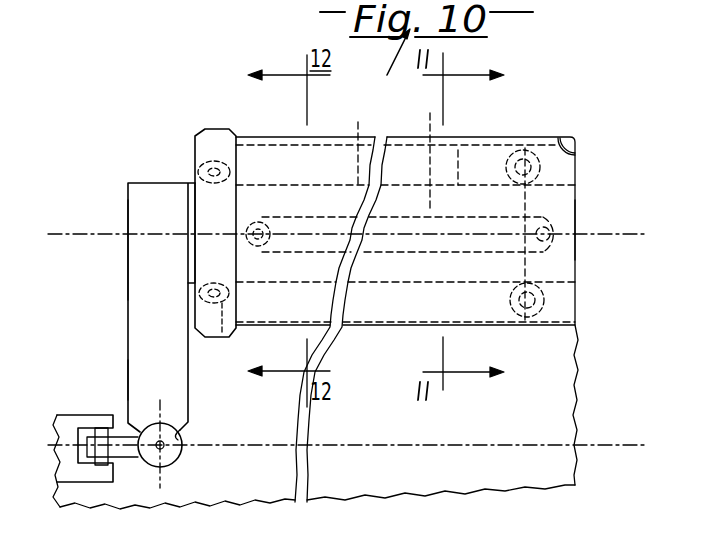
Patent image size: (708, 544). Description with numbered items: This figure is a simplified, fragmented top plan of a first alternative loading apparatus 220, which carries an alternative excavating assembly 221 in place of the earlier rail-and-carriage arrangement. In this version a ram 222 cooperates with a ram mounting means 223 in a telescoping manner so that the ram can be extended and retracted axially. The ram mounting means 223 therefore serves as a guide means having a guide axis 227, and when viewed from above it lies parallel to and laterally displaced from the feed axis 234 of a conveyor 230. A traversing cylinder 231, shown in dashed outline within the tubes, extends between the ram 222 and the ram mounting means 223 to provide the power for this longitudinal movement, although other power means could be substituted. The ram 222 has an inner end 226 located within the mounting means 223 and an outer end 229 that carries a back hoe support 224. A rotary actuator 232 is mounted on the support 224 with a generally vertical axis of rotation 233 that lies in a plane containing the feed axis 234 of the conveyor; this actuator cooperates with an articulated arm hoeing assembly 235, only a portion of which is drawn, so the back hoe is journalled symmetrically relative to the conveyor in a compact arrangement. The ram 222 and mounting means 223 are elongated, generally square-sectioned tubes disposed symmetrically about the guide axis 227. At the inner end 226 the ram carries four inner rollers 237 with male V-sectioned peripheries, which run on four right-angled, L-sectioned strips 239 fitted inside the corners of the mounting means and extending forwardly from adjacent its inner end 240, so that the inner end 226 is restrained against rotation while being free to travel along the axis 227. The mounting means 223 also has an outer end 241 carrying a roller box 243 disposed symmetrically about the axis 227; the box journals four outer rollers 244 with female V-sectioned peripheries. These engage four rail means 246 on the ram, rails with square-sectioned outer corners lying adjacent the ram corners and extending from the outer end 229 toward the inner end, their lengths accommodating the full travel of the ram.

The first alternative loading apparatus 220 is at (593, 87).
The alternative excavating assembly 221 is at (118, 324).
The ram 222 is at (187, 176).
The ram mounting means 223 is at (506, 130).
The back hoe support 224 is at (143, 379).
The inner end of the ram 226 is at (585, 289).
The guide axis 227 is at (621, 200).
The outer end of the ram 229 is at (142, 267).
The conveyor 230 is at (378, 413).
The traversing cylinder 231 is at (429, 120).
The rotary actuator 232 is at (182, 455).
The vertical axis of rotation 233 is at (180, 429).
The feed axis 234 is at (517, 441).
The articulated arm hoeing assembly 235 is at (94, 474).
The inner rollers 237 is at (531, 150).
The L-sectioned strips 239 is at (459, 153).
The inner end of the ram mounting means 240 is at (560, 134).
The outer end of the ram mounting means 241 is at (242, 136).
The roller box 243 is at (210, 126).
The outer rollers 244 is at (213, 157).
The rail means 246 is at (295, 303).